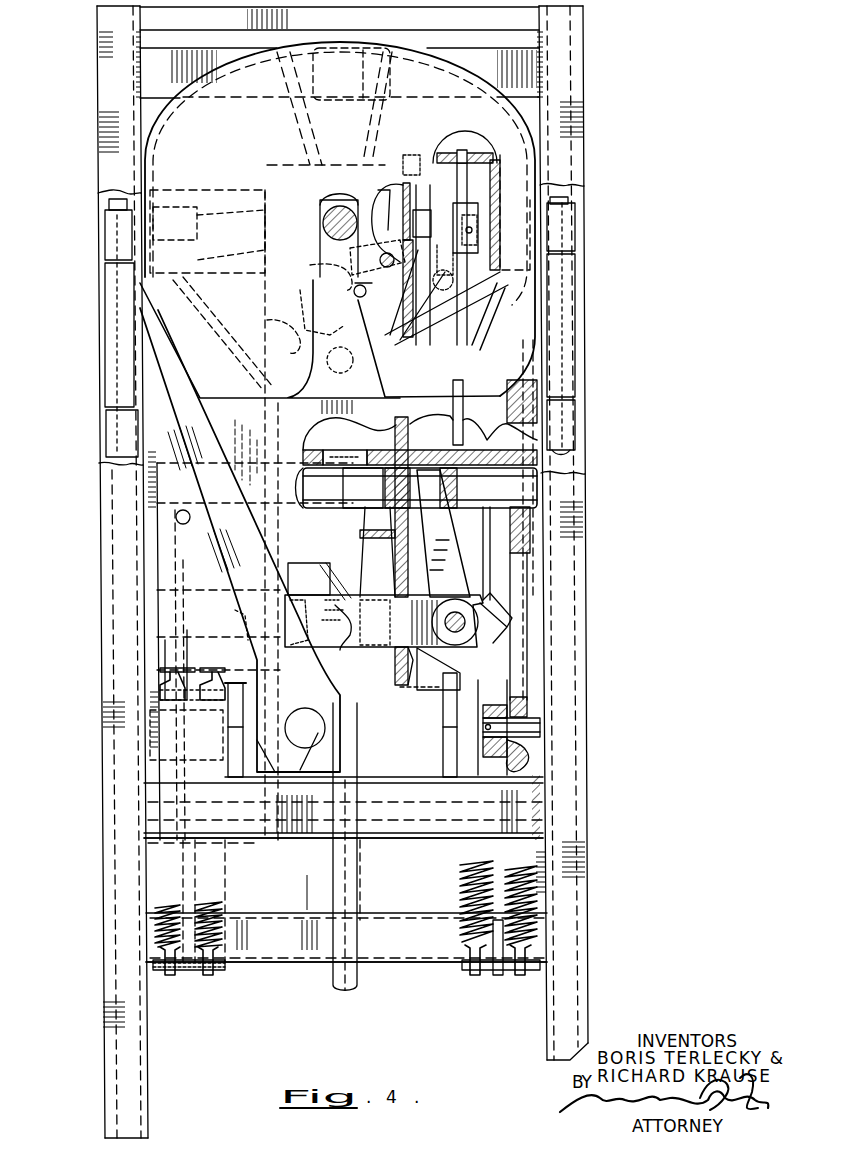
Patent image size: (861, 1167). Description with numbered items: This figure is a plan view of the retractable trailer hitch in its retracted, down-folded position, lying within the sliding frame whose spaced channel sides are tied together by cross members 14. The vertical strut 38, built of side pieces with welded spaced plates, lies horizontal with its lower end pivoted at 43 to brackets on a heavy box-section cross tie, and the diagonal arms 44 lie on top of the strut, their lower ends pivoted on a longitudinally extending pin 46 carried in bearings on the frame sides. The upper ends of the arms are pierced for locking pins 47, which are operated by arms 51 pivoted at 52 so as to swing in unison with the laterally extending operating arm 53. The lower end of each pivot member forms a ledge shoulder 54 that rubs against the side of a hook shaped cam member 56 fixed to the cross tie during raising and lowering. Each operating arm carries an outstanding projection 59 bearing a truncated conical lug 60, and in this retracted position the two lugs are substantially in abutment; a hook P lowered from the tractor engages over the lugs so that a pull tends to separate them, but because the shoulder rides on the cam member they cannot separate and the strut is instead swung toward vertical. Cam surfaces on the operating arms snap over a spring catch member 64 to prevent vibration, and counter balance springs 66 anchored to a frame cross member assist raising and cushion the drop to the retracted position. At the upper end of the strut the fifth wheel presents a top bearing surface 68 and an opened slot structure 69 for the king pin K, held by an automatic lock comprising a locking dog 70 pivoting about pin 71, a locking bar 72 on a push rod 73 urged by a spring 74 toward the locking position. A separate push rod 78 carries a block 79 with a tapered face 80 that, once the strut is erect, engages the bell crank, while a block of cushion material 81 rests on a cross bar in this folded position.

The cross members 14 is at (303, 843).
The vertical strut structure 38 is at (420, 551).
The lower pivot 43 is at (548, 708).
The diagonal arms 44 is at (98, 345).
The longitudinally extending pin 46 is at (554, 470).
The locking pins 47 is at (493, 508).
The arms 51 is at (452, 500).
The pivot members 52 is at (420, 680).
The operating arm 53 is at (393, 669).
The ledge shoulder 54 is at (438, 712).
The hook shaped cam members 56 is at (462, 723).
The outstanding projection 59 is at (397, 654).
The truncated conical lug 60 is at (347, 657).
The spring catch member 64 is at (495, 643).
The counter balance springs 66 is at (235, 915).
The top bearing surface 68 is at (337, 441).
The opened slot structure 69 is at (340, 287).
The locking dog 70 is at (362, 296).
The pin 71 is at (429, 264).
The locking bar 72 is at (446, 222).
The push rod 73 is at (346, 463).
The spring 74 is at (428, 172).
The push rod 78 is at (473, 520).
The block 79 is at (481, 212).
The tapered face 80 is at (443, 140).
The block of rubber or cushion material 81 is at (351, 74).
The king pin K is at (338, 198).
The hook P is at (358, 722).